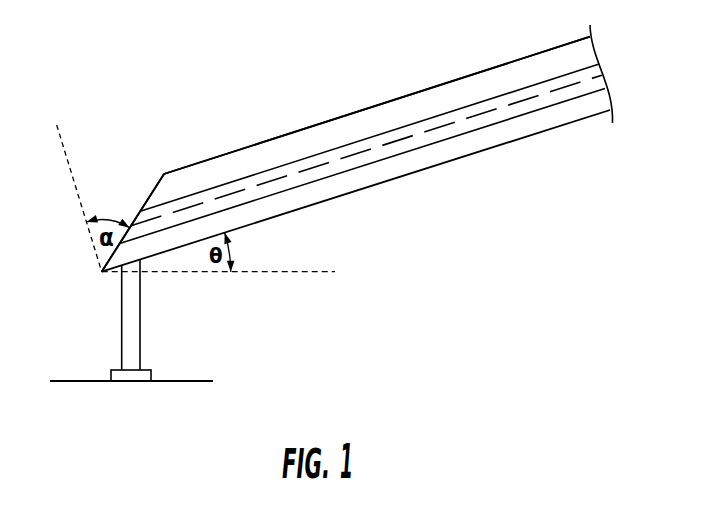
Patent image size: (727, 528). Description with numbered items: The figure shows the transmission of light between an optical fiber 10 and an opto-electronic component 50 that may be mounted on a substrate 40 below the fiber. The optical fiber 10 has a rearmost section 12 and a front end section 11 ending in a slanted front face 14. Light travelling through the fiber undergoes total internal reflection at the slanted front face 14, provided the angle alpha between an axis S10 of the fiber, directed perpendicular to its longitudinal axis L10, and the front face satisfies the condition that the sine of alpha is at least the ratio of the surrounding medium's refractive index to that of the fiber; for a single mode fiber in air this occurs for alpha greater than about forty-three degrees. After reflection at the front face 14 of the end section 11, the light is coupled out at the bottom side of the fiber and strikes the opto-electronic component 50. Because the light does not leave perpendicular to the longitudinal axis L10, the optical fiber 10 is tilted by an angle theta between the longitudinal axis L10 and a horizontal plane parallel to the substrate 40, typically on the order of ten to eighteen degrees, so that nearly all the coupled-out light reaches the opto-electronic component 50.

The optical fiber 10 is at (544, 45).
The front end section 11 is at (192, 165).
The rearmost section 12 is at (348, 127).
The slanted front face 14 is at (150, 193).
The longitudinal axis L10 is at (472, 118).
The axis of the optical fiber S10 is at (70, 181).
The opto-electronic component 50 is at (153, 367).
The substrate 40 is at (70, 382).